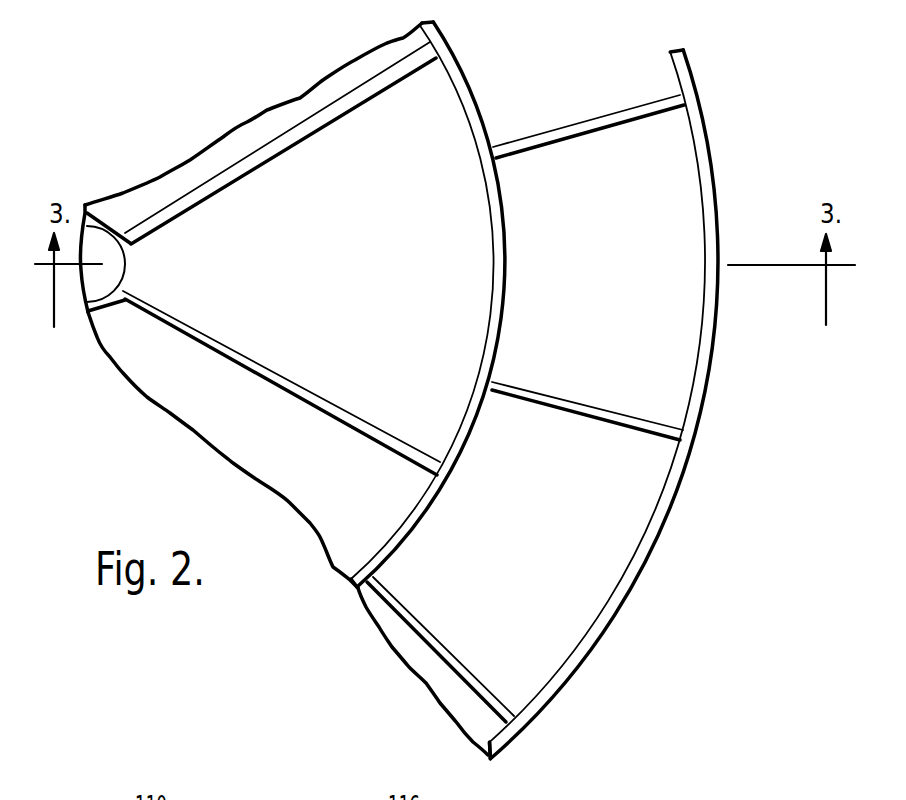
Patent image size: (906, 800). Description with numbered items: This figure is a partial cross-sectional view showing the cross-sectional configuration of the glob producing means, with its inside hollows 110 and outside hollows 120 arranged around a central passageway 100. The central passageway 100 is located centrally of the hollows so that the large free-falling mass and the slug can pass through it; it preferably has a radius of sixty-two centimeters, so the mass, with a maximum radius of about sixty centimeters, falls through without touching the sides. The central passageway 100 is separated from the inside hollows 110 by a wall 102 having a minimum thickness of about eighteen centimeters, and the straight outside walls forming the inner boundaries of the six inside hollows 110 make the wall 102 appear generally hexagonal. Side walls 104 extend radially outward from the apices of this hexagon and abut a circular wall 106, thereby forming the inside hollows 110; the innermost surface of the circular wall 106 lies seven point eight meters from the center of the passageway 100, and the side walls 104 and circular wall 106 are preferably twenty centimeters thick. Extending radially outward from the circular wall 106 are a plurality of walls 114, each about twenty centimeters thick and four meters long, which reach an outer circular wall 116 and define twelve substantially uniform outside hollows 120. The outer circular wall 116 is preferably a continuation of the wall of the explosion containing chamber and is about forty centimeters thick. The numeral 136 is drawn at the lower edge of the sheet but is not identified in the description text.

The central passageway 100 is at (97, 289).
The wall 102 is at (127, 275).
The side walls 104 is at (280, 145).
The circular wall 106 is at (490, 153).
The inside hollows 110 is at (243, 140).
The walls 114 is at (615, 113).
The outer circular wall 116 is at (705, 398).
The outside hollows 120 is at (556, 96).
The edge 136 is at (496, 799).